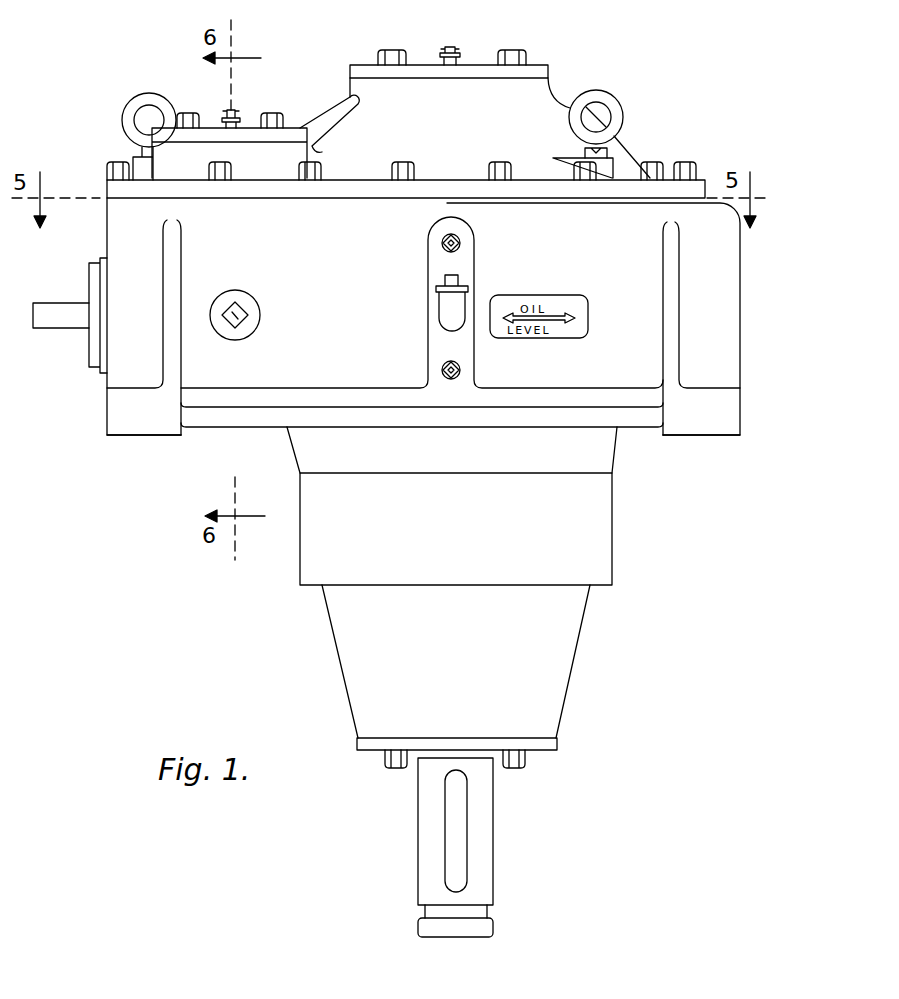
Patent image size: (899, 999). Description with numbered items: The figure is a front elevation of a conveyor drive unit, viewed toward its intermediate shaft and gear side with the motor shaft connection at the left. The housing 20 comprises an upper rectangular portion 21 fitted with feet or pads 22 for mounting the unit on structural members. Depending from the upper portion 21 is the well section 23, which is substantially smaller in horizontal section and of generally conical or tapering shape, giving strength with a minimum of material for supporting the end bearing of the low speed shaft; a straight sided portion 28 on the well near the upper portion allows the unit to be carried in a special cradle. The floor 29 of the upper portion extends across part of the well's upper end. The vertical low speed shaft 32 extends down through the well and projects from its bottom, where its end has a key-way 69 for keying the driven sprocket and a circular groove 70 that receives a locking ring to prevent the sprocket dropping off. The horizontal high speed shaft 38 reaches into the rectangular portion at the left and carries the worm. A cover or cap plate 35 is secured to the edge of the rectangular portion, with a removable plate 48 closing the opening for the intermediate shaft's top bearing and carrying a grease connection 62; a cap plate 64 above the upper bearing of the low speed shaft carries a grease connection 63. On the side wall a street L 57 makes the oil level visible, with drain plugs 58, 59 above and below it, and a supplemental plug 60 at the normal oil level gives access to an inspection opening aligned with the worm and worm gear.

The housing 20 is at (423, 262).
The upper rectangular portion 21 is at (138, 238).
The feet or pads 22 is at (142, 436).
The well section 23 is at (456, 676).
The straight sided portion 28 is at (613, 552).
The floor 29 is at (233, 428).
The low speed shaft 32 is at (493, 808).
The cover or cap plate 35 is at (452, 121).
The high speed shaft 38 is at (52, 320).
The removable plate 48 is at (291, 128).
The street L 57 is at (450, 313).
The drain plug 58 is at (461, 243).
The drain plug 59 is at (461, 370).
The supplemental plug 60 is at (243, 322).
The grease connection 62 is at (228, 112).
The grease connection 63 is at (444, 52).
The cap plate 64 is at (532, 72).
The key-way 69 is at (458, 880).
The circular groove 70 is at (422, 912).